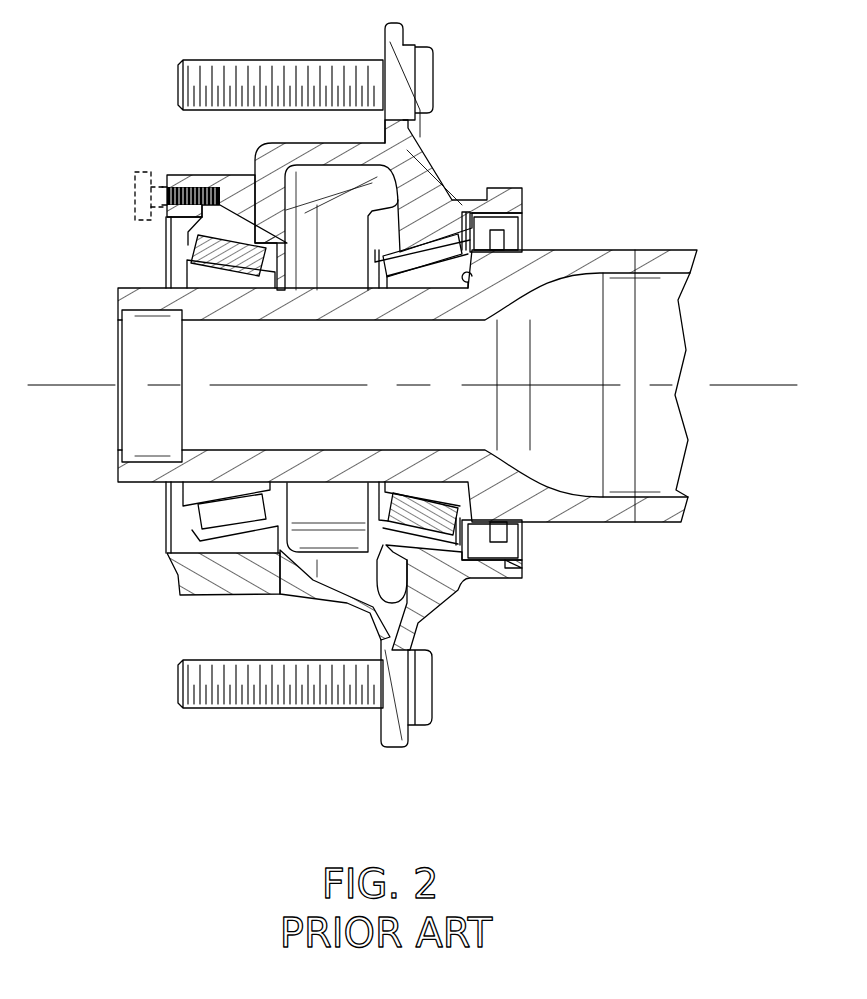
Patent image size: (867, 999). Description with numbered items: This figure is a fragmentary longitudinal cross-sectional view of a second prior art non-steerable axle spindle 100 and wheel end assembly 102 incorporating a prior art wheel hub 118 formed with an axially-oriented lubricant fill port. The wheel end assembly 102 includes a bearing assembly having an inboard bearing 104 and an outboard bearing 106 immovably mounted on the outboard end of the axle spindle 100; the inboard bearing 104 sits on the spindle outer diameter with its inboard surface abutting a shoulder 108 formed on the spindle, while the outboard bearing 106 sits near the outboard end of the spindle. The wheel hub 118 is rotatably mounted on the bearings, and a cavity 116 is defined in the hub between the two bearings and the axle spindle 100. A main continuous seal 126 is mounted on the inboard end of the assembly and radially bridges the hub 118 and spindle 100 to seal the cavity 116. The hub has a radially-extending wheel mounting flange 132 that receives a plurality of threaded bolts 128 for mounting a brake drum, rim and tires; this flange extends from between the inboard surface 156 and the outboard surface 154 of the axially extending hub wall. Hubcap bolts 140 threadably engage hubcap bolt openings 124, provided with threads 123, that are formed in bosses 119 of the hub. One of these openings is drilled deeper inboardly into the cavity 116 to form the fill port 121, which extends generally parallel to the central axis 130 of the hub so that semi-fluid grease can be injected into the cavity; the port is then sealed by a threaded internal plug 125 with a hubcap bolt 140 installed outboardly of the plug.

The axle spindle 100 is at (118, 298).
The wheel end assembly 102 is at (432, 619).
The inboard bearing 104 is at (433, 278).
The outboard bearing 106 is at (223, 273).
The shoulder 108 is at (468, 283).
The cavity 116 is at (280, 183).
The wheel hub 118 is at (174, 572).
The bosses 119 is at (190, 176).
The fill port 121 is at (250, 198).
The threads 123 is at (167, 189).
The hubcap bolt openings 124 is at (167, 203).
The threaded internal plug 125 is at (210, 188).
The main continuous seal 126 is at (522, 228).
The threaded bolts 128 is at (263, 706).
The central axis 130 is at (672, 386).
The wheel mounting flange 132 is at (392, 745).
The hubcap bolts 140 is at (134, 178).
The outboard surface 154 is at (167, 532).
The inboard surface 156 is at (523, 578).